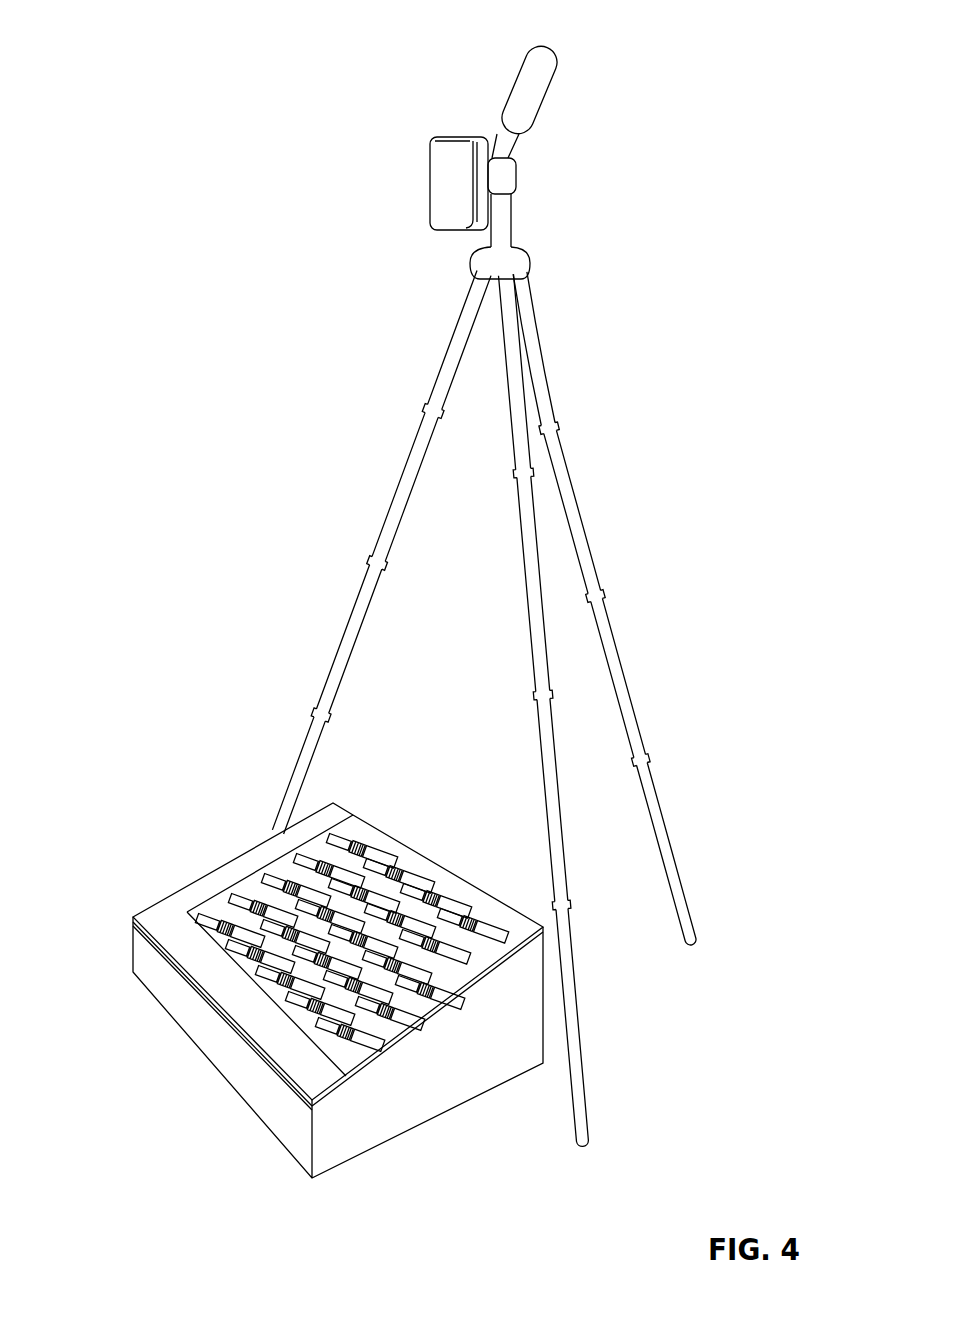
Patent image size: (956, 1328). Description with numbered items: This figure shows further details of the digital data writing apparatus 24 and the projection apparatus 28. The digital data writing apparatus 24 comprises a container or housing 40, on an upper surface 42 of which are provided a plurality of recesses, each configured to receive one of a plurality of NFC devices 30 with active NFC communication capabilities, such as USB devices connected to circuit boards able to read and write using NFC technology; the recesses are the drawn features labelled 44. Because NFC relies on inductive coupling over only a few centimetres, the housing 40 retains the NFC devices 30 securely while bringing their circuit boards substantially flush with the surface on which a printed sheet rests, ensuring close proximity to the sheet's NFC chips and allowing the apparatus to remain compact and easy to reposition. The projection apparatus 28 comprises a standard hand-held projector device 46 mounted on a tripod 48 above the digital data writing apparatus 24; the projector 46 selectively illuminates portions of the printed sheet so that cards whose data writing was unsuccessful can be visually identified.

The projection apparatus 28 is at (440, 62).
The projector device 46 is at (443, 198).
The tripod 48 is at (518, 260).
The digital data writing apparatus 24 is at (144, 836).
The housing 40 is at (520, 1053).
The upper surface 42 is at (375, 844).
The receptacle slots 44 is at (497, 923).
The NFC devices 30 is at (393, 1003).